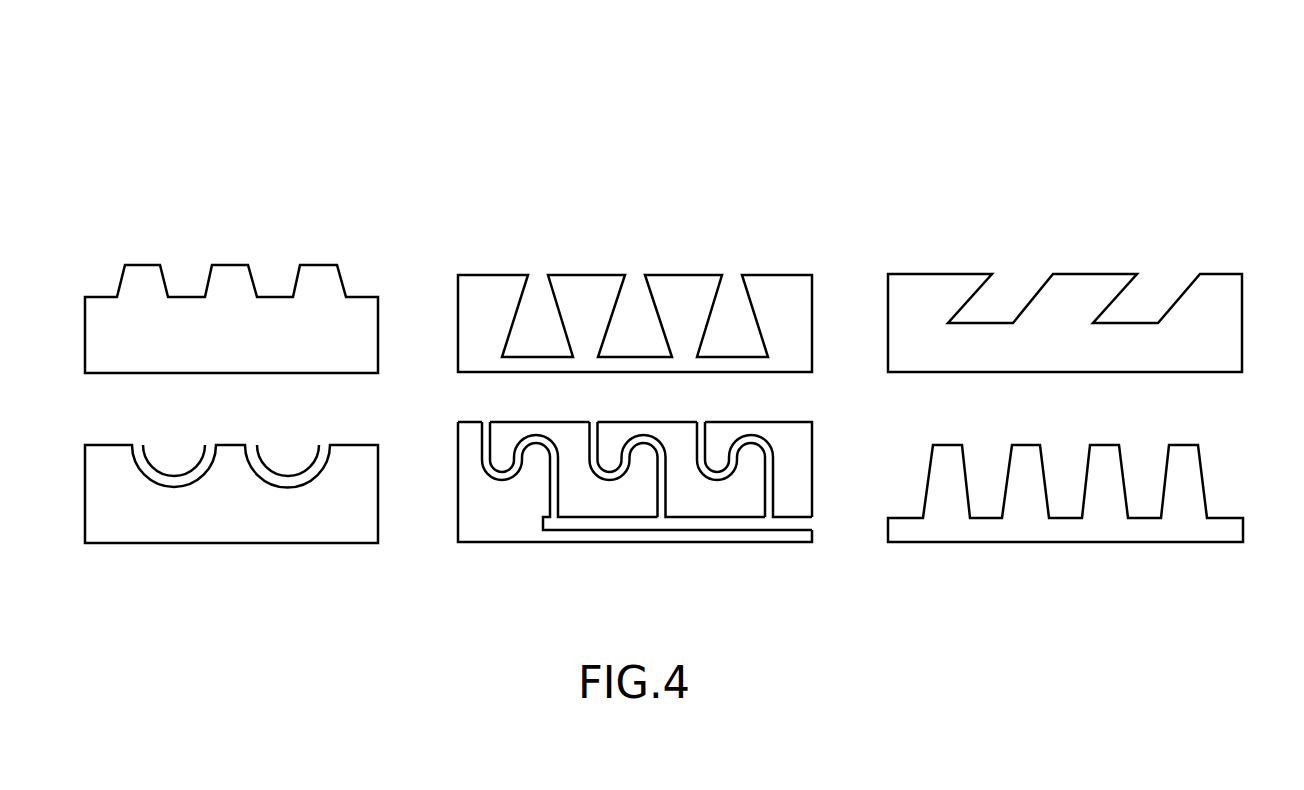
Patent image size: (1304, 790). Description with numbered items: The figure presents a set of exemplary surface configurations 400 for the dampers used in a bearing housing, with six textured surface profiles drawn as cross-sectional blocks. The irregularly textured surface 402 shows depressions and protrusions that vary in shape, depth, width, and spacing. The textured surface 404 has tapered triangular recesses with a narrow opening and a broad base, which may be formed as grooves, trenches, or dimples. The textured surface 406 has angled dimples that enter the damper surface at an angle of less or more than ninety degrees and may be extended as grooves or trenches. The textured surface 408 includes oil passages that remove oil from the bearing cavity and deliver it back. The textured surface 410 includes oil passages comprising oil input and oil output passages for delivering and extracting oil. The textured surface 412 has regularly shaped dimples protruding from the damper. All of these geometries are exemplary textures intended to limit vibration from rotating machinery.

The set of microstructure profiles 400 is at (140, 118).
The irregularly textured surface 402 is at (323, 277).
The textured surface 404 is at (783, 287).
The textured surface 406 is at (1224, 283).
The textured surface 408 is at (149, 523).
The textured surface 410 is at (715, 500).
The textured surface 412 is at (1192, 487).